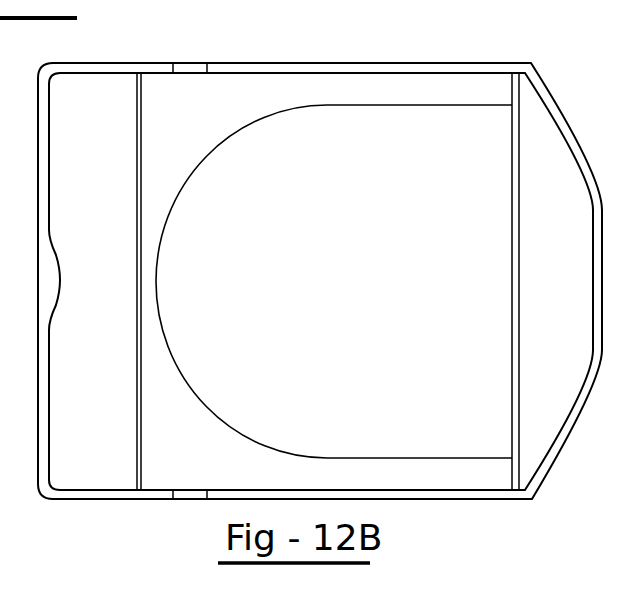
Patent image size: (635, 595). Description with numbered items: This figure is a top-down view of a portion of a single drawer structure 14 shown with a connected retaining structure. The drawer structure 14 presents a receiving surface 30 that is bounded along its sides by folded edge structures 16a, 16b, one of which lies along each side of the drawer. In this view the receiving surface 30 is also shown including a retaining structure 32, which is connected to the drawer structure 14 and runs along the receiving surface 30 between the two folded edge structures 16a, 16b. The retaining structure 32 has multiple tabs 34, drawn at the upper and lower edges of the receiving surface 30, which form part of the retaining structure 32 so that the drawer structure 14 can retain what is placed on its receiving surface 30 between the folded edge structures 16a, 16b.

The drawer structure 14 is at (467, 60).
The folded edge structure 16a is at (571, 290).
The folded edge structure 16b is at (112, 290).
The receiving surface 30 is at (367, 290).
The retaining structure 32 is at (305, 80).
The tabs 34 is at (190, 68).